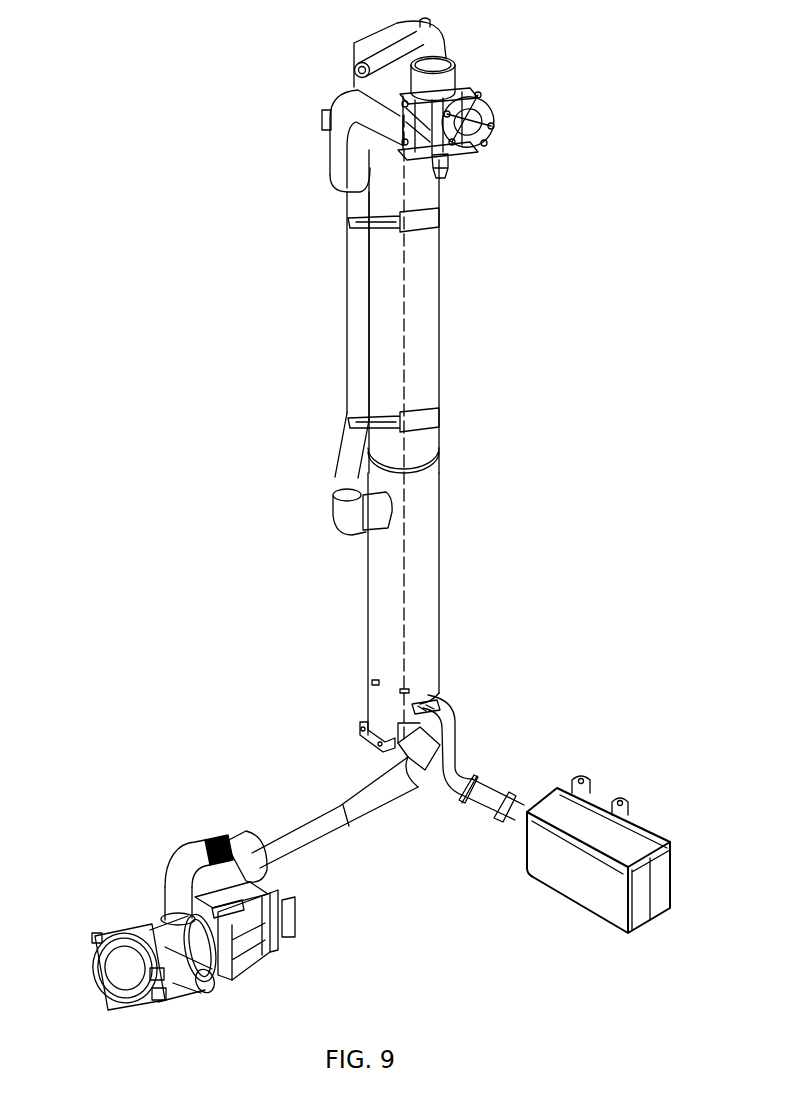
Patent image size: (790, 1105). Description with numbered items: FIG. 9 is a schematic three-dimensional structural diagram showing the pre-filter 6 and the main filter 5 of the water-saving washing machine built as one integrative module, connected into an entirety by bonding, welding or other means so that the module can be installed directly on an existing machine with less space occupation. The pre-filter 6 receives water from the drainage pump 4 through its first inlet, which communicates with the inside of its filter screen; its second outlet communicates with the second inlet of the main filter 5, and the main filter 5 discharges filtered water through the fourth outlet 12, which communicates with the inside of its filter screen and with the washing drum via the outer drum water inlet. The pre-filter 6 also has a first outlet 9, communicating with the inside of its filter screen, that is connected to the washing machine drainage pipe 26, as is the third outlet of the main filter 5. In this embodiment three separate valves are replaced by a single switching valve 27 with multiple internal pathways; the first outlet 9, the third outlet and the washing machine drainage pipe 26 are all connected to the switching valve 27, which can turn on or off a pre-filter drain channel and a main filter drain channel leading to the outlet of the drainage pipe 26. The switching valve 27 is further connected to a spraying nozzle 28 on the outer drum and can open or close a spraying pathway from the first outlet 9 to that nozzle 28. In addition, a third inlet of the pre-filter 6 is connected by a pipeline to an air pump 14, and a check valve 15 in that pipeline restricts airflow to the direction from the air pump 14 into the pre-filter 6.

The drainage pump 4 is at (135, 925).
The main filter 5 is at (427, 328).
The pre-filter 6 is at (422, 630).
The first outlet 9 is at (377, 507).
The fourth outlet 12 is at (359, 66).
The air pump 14 is at (600, 795).
The check valve 15 is at (500, 777).
The washing machine drainage pipe 26 is at (495, 110).
The switching valve 27 is at (470, 68).
The spraying nozzle 28 is at (448, 175).